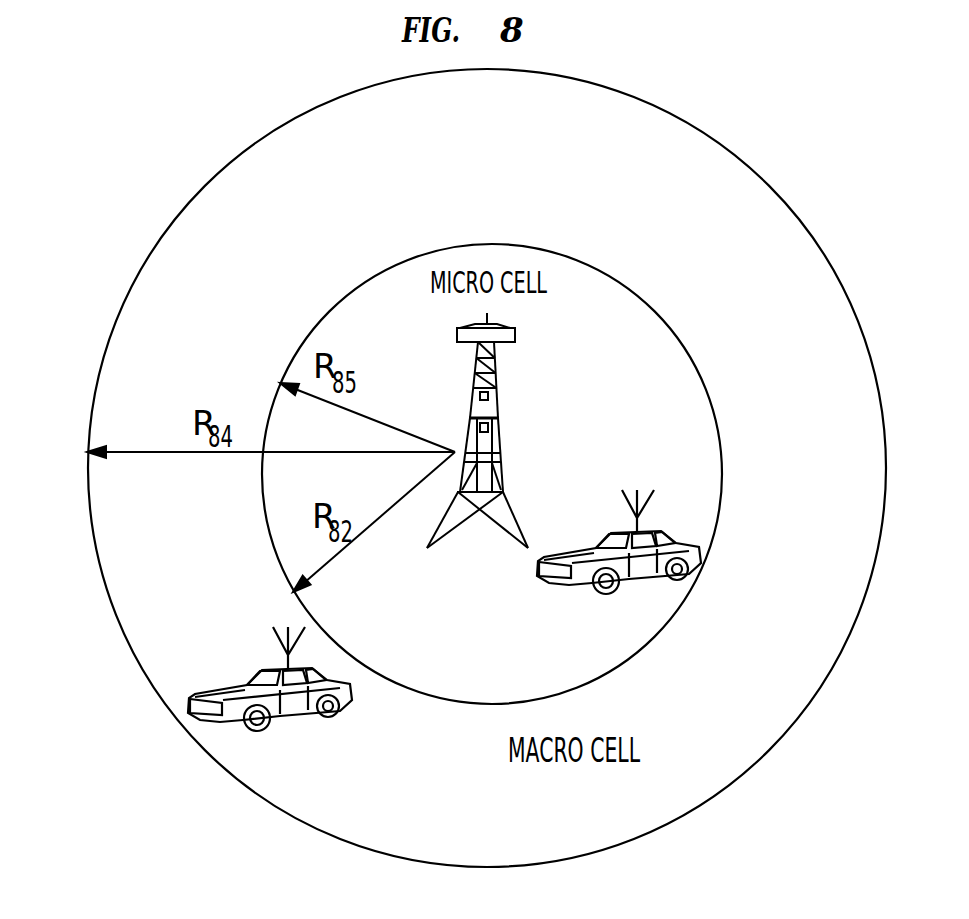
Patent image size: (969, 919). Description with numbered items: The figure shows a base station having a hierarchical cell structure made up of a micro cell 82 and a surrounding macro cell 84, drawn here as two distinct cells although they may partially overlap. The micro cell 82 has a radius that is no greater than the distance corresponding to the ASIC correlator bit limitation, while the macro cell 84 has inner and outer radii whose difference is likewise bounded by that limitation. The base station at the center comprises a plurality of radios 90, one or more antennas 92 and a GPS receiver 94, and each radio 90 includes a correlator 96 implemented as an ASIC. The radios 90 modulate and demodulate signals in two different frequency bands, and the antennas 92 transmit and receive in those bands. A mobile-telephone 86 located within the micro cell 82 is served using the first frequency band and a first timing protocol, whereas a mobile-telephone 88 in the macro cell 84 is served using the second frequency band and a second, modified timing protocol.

The micro cell 82 is at (723, 443).
The macro cell 84 is at (112, 326).
The mobile-telephone 86 is at (683, 545).
The mobile-telephone 88 is at (218, 685).
The radio 90 is at (497, 405).
The antenna 92 is at (515, 336).
The GPS receiver 94 is at (504, 486).
The correlator 96 is at (479, 395).